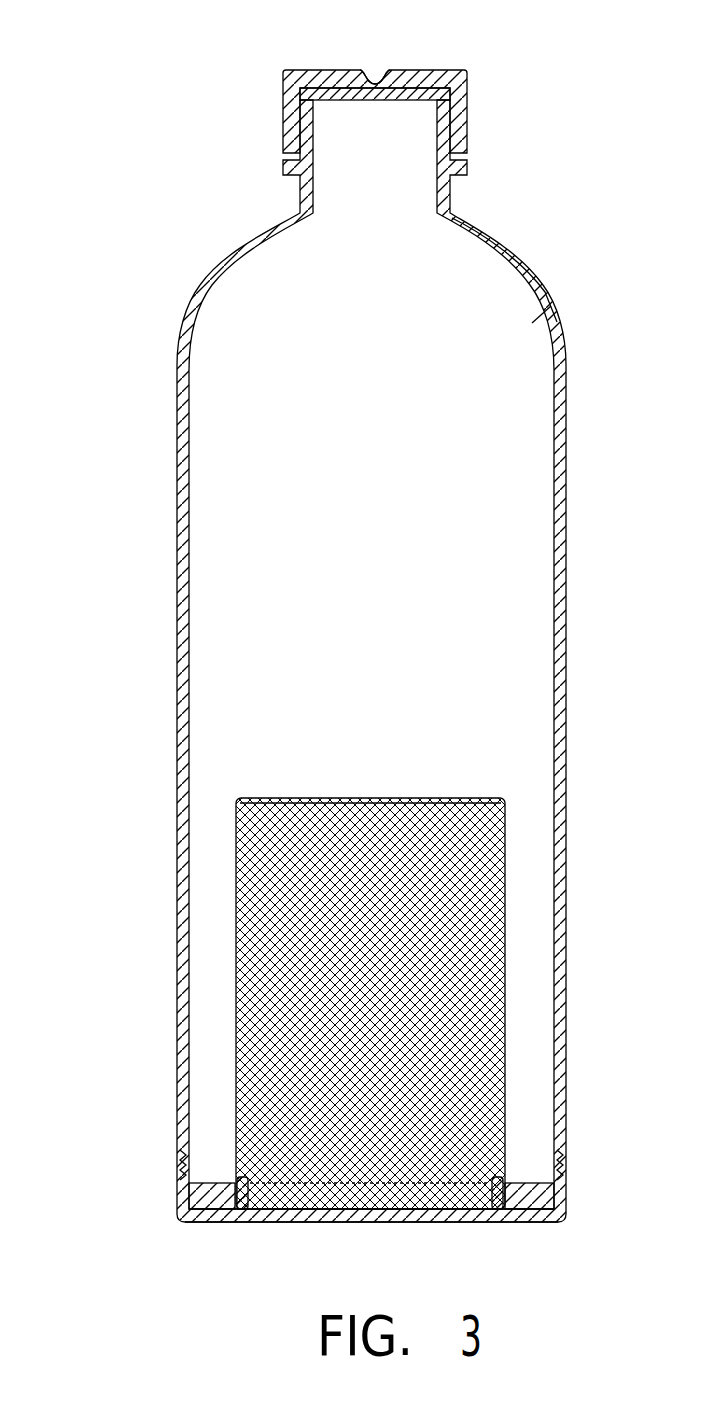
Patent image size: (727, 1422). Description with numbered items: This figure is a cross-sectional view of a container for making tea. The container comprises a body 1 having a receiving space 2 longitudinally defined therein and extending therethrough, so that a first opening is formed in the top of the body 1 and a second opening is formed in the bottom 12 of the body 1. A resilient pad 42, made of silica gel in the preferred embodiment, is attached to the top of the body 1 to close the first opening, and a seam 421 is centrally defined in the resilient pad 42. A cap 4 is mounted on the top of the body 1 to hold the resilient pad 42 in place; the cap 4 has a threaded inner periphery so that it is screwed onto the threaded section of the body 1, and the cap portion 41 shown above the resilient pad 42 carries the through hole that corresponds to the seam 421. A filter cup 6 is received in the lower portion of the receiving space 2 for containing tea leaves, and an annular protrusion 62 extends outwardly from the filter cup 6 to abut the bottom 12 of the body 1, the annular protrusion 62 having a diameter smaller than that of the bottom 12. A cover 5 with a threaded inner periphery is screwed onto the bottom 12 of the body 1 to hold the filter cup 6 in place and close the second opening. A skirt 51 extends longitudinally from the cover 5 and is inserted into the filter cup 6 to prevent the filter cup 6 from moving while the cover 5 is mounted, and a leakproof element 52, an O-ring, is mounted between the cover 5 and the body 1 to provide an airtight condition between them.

The body 1 is at (343, 680).
The receiving space 2 is at (557, 305).
The bottom 12 is at (537, 1207).
The cap 4 is at (392, 77).
The sealing liner 41 is at (424, 88).
The resilient pad 42 is at (283, 87).
The seam 421 is at (365, 72).
The cover 5 is at (373, 1219).
The skirt 51 is at (263, 1208).
The leakproof element 52 is at (563, 1155).
The filter cup 6 is at (373, 776).
The annular protrusion 62 is at (178, 1198).